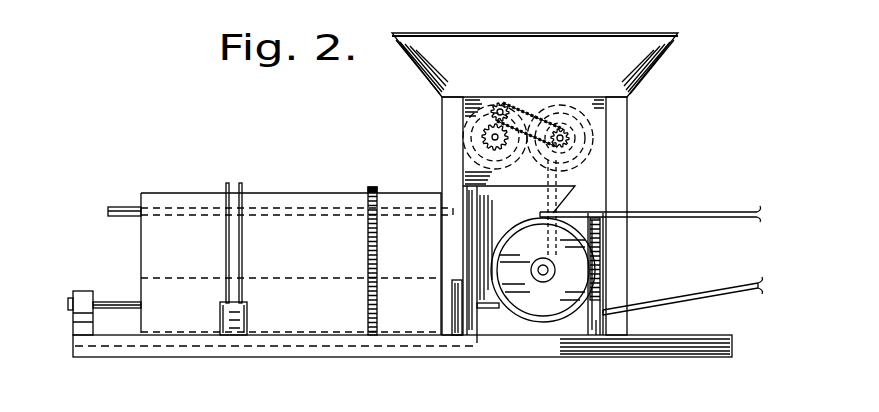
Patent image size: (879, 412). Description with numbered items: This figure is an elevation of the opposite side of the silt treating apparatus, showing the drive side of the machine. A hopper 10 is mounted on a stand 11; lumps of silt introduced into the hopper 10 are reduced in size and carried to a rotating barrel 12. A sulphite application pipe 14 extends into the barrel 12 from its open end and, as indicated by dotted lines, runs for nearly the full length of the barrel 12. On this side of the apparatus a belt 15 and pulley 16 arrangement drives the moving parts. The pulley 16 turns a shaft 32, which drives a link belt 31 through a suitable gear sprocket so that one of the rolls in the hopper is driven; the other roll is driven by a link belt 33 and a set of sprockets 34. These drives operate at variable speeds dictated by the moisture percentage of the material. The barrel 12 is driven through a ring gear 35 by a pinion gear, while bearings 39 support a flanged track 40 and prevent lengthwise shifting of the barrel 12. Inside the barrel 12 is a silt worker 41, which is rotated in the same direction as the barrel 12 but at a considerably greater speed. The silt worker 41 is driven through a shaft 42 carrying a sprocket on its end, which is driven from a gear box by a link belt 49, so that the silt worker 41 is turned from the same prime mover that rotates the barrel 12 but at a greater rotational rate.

The hopper 10 is at (598, 42).
The stand 11 is at (620, 128).
The rotating barrel 12 is at (202, 195).
The sulphite application pipe 14 is at (122, 207).
The belt 15 is at (723, 287).
The pulley 16 is at (588, 268).
The link belt 31 is at (558, 212).
The shaft 32 is at (543, 276).
The link belt 33 is at (535, 112).
The set of sprockets 34 is at (558, 142).
The ring gear 35 is at (368, 188).
The bearings 39 is at (236, 301).
The flanged track 40 is at (242, 252).
The silt worker 41 is at (140, 300).
The shaft 42 is at (490, 308).
The link belt 49 is at (597, 250).